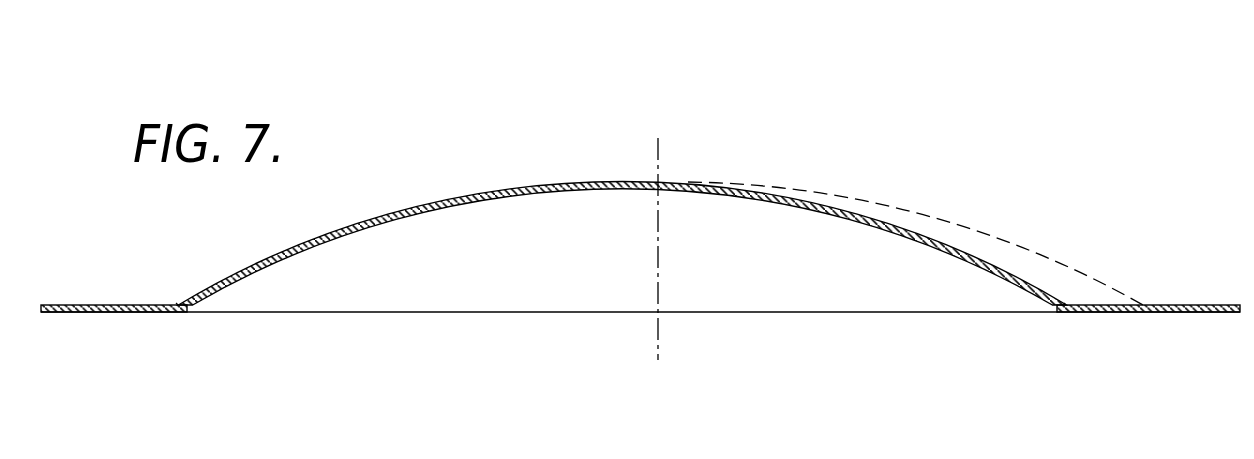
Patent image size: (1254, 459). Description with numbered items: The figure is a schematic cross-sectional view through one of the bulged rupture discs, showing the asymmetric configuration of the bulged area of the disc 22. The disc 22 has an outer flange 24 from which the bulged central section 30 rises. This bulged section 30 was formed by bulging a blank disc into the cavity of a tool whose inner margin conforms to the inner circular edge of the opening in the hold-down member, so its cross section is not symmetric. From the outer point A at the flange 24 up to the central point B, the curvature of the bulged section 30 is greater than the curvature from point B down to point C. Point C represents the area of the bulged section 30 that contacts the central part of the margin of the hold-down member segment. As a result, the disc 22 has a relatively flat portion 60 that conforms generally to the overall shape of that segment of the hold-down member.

The rupture disc 22 is at (833, 182).
The flange 24 is at (128, 313).
The central section 30 is at (622, 243).
The relatively flat portion 60 is at (1096, 314).
The outer point A is at (175, 303).
The central point B is at (658, 237).
The point C is at (1064, 303).